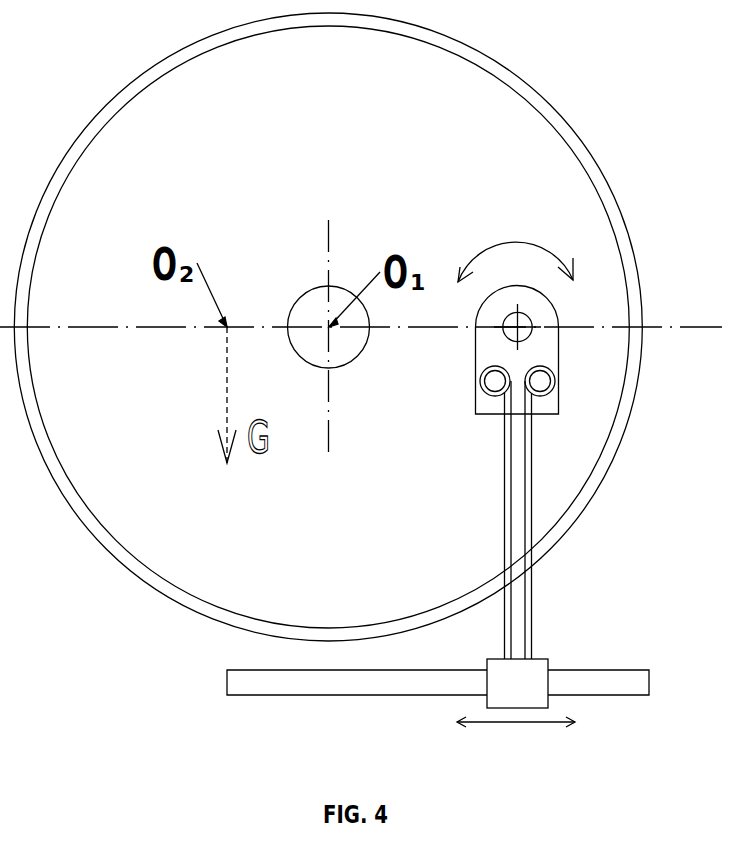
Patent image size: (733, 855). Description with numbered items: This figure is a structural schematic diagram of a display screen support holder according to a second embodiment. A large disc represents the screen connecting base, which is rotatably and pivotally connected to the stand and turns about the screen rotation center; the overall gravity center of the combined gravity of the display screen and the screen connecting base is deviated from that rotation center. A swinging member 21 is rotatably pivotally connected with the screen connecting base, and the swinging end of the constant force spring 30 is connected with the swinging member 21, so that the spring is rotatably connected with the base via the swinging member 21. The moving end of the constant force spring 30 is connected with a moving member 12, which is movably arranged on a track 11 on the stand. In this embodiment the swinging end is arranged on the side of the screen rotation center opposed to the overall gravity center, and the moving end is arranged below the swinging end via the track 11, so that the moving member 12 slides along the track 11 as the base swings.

The track 11 is at (297, 687).
The moving member 12 is at (528, 673).
The swinging member 21 is at (547, 315).
The constant force spring 30 is at (532, 467).